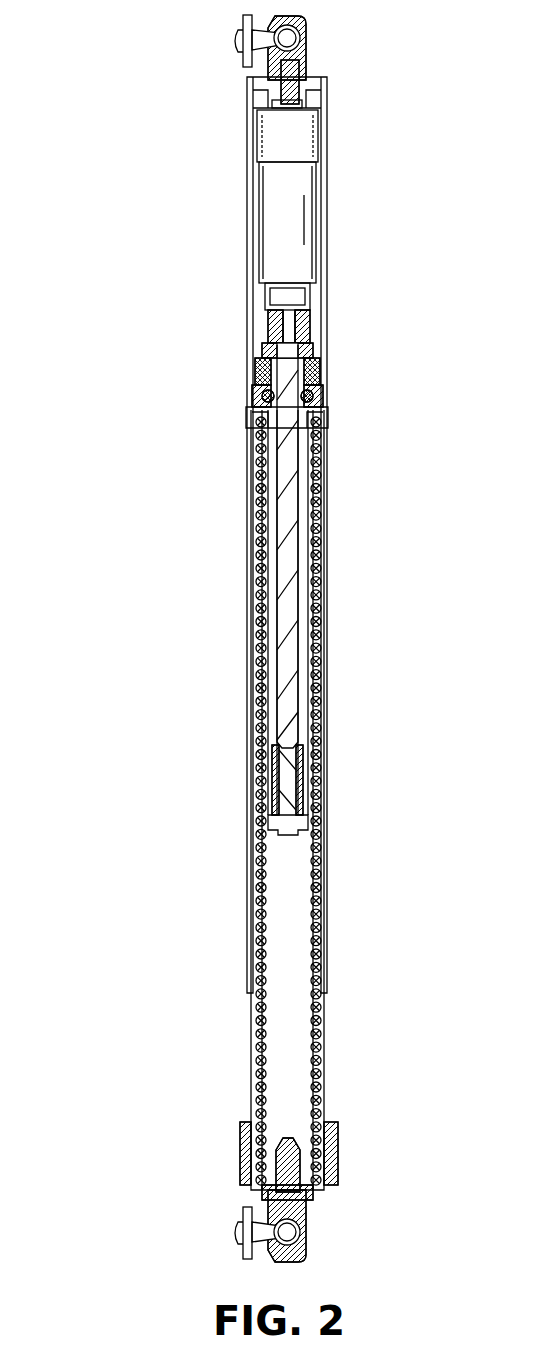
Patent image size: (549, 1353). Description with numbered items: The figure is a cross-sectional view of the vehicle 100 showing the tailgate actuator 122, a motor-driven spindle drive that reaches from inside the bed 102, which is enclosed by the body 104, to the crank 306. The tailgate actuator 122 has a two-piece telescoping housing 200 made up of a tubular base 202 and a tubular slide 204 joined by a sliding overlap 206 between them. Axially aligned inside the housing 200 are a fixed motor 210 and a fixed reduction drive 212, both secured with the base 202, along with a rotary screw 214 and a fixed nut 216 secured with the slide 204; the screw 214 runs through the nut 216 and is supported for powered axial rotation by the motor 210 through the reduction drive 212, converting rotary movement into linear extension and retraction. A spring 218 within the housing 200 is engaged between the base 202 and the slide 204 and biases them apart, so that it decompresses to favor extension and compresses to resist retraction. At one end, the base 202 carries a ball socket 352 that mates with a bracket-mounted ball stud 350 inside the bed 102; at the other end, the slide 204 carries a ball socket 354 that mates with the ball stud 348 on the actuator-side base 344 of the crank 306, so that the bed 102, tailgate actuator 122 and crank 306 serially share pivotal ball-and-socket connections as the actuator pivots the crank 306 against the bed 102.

The vehicle 100 is at (146, 26).
The bed 102 is at (243, 62).
The body 104 is at (240, 22).
The tailgate actuator 122 is at (330, 108).
The housing 200 is at (320, 140).
The tubular base 202 is at (320, 170).
The tubular slide 204 is at (326, 1092).
The sliding overlap 206 is at (328, 818).
The motor 210 is at (318, 230).
The reduction drive 212 is at (310, 303).
The screw 214 is at (300, 722).
The nut 216 is at (305, 755).
The spring 218 is at (306, 790).
The crank 306 is at (243, 1222).
The actuator-side base 344 is at (243, 1250).
The ball stud 348 is at (314, 1201).
The bracket-mounted ball stud 350 is at (314, 58).
The ball socket 352 is at (300, 37).
The ball socket 354 is at (300, 1232).